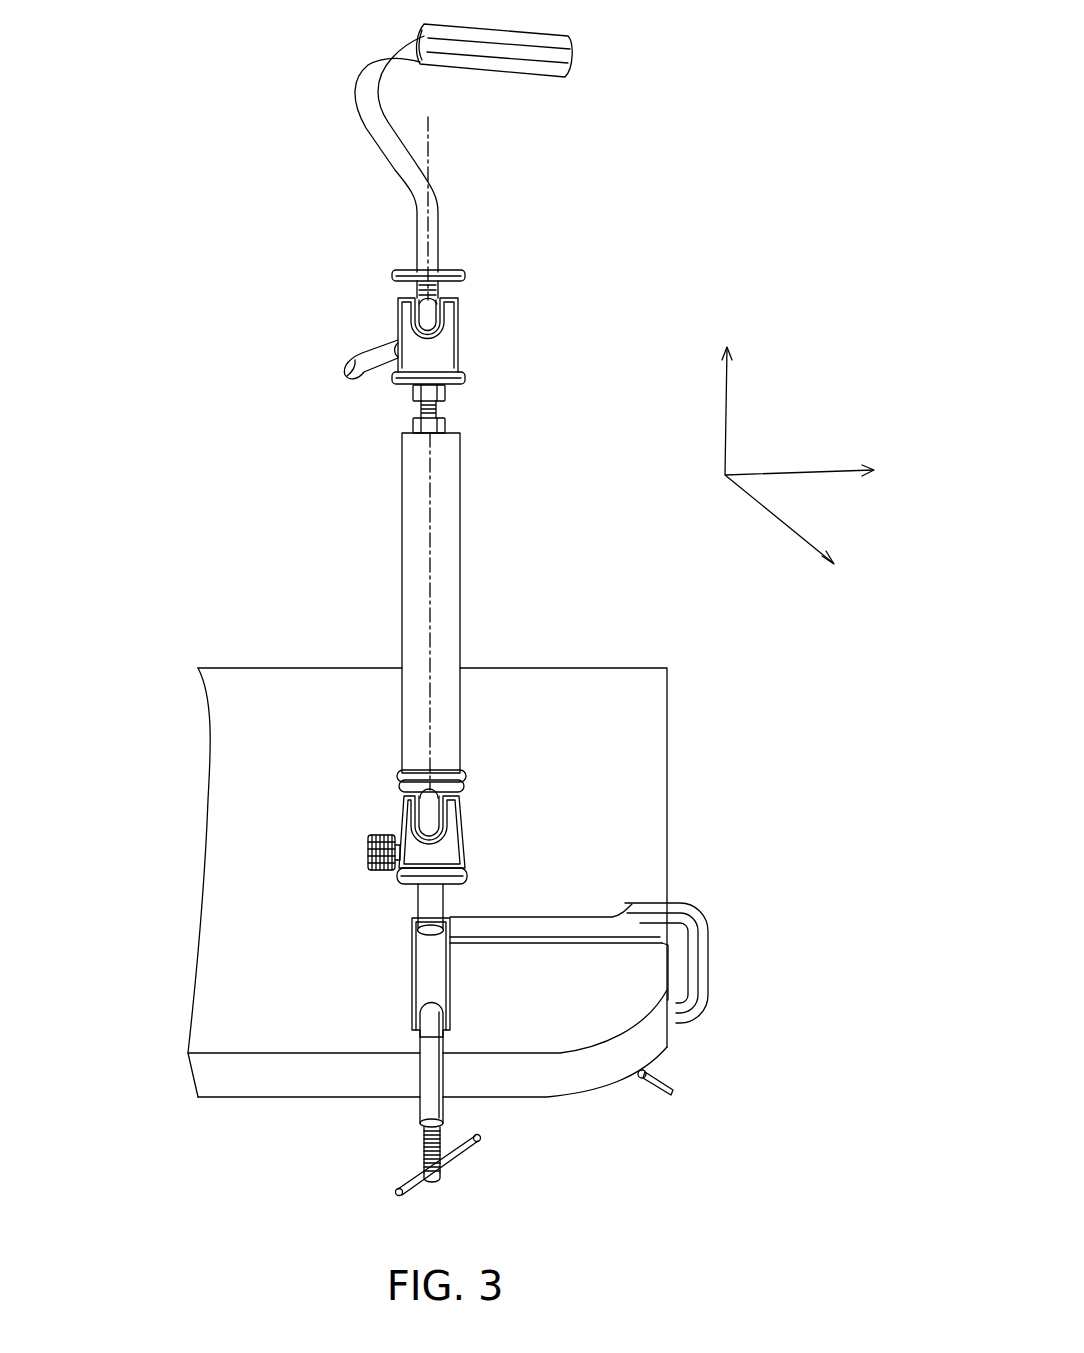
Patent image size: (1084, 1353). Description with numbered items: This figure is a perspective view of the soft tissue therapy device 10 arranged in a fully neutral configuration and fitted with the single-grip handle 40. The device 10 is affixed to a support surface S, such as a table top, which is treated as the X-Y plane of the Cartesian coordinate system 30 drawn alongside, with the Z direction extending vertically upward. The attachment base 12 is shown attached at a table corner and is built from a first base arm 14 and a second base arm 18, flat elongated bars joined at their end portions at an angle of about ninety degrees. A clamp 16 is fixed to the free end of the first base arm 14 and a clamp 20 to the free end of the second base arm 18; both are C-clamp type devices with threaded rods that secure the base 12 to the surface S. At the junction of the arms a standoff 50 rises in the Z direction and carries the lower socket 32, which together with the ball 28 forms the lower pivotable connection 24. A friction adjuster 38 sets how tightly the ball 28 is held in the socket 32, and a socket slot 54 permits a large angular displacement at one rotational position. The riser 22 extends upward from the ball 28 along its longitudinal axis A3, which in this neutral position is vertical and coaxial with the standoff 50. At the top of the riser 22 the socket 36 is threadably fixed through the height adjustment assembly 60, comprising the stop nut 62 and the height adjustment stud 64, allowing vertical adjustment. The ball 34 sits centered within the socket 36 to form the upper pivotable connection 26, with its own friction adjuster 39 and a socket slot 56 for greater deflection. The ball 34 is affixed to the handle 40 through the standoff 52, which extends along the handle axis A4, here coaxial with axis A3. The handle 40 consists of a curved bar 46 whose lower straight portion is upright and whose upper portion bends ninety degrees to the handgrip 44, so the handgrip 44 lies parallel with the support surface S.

The soft tissue therapy device 10 is at (210, 544).
The attachment base 12 is at (357, 1015).
The first base arm 14 is at (425, 978).
The clamp 16 is at (428, 1072).
The second base arm 18 is at (530, 933).
The clamp 20 is at (690, 976).
The riser 22 is at (452, 540).
The lower pivotable connection 24 is at (485, 800).
The upper pivotable connection 26 is at (345, 338).
The ball 28 is at (410, 798).
The Cartesian coordinate system 30 is at (806, 385).
The lower socket 32 is at (453, 860).
The ball 34 is at (400, 292).
The socket 36 is at (444, 357).
The friction adjuster 38 is at (367, 851).
The friction adjuster 39 is at (358, 362).
The single-grip handle 40 is at (330, 128).
The handgrip 44 is at (538, 42).
The curved bar 46 is at (386, 152).
The standoff 50 is at (430, 908).
The standoff 52 is at (447, 285).
The socket slot 54 is at (442, 822).
The socket slot 56 is at (443, 312).
The height adjustment assembly 60 is at (478, 408).
The stop nut 62 is at (415, 425).
The height adjustment stud 64 is at (420, 408).
The riser longitudinal axis A3 is at (430, 655).
The longitudinal axis of handle A4 is at (428, 125).
The support surface S is at (640, 762).